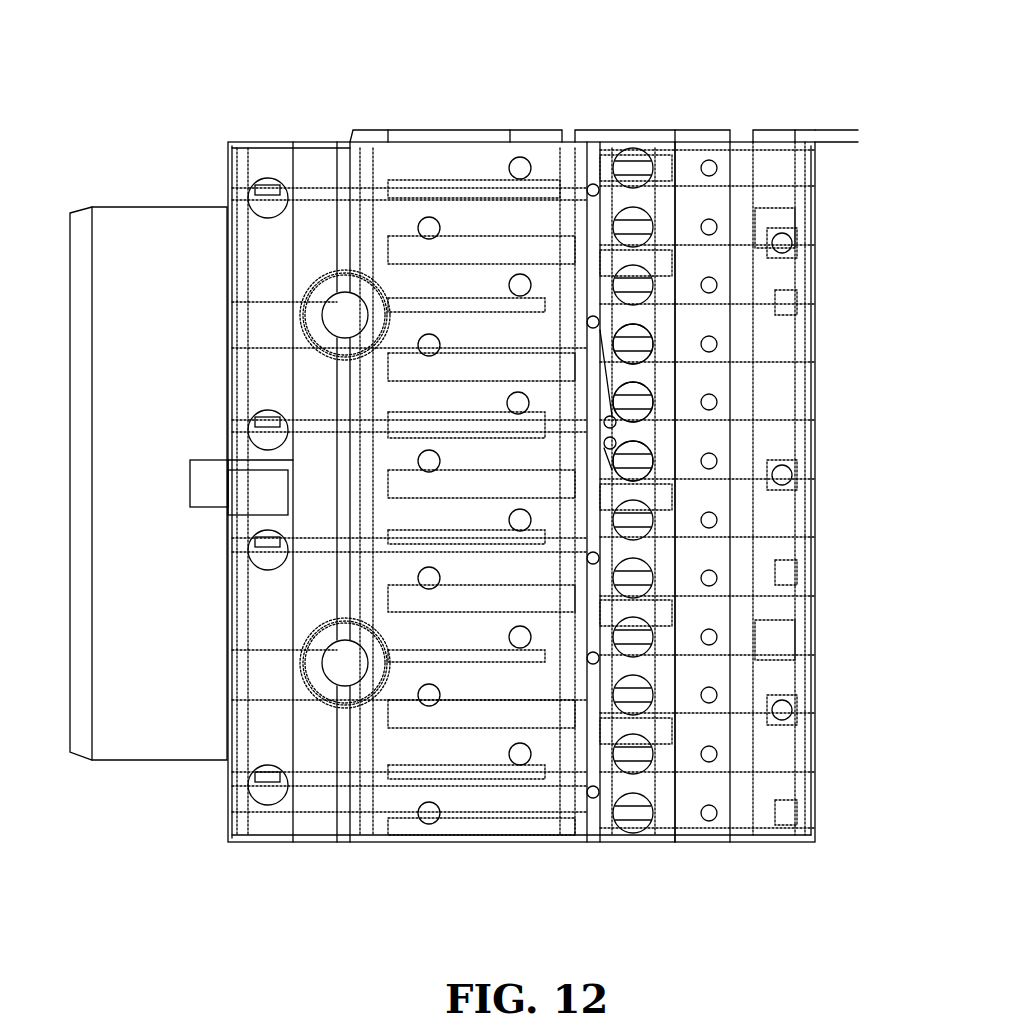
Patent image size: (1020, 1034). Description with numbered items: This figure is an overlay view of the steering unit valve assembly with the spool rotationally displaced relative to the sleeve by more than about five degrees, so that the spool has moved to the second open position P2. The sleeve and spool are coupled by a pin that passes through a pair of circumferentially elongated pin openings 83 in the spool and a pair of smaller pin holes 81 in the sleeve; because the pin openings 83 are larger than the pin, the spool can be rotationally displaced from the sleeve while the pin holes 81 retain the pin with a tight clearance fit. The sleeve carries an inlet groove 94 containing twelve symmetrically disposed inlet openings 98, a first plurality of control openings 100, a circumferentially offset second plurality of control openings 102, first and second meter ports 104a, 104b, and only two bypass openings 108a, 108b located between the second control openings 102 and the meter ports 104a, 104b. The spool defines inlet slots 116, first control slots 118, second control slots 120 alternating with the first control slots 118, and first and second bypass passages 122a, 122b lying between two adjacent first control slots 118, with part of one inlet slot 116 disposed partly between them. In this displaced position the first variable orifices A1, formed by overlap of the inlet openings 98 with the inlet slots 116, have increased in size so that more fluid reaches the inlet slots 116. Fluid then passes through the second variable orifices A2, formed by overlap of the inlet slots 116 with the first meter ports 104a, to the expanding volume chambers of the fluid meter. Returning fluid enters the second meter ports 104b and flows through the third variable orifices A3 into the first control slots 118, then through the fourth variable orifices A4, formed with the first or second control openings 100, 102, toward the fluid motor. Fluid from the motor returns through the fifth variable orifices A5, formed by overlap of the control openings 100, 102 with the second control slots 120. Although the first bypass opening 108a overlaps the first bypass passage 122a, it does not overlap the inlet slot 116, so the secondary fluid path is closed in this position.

The second open position P2 is at (565, 100).
The second plurality of control openings 102 is at (520, 157).
The inlet groove 94 is at (700, 148).
The inlet openings 98 is at (717, 283).
The circumferentially elongated pin openings 83 is at (333, 285).
The pin holes 81 is at (340, 293).
The first plurality of control openings 100 is at (441, 228).
The second bypass passage 122b is at (613, 437).
The first meter ports 104a is at (645, 340).
The third variable orifices A3 is at (648, 390).
The second bypass opening 108b is at (606, 417).
The second meter ports 104b is at (650, 395).
The fourth variable orifices A4 is at (435, 357).
The first bypass opening 108a is at (608, 437).
The first variable orifices A1 is at (650, 412).
The second control slots 120 is at (442, 412).
The first control slots 118 is at (510, 396).
The second variable orifices A2 is at (854, 462).
The first bypass passage 122a is at (614, 449).
The inlet slots 116 is at (640, 430).
The fifth variable orifices A5 is at (718, 578).